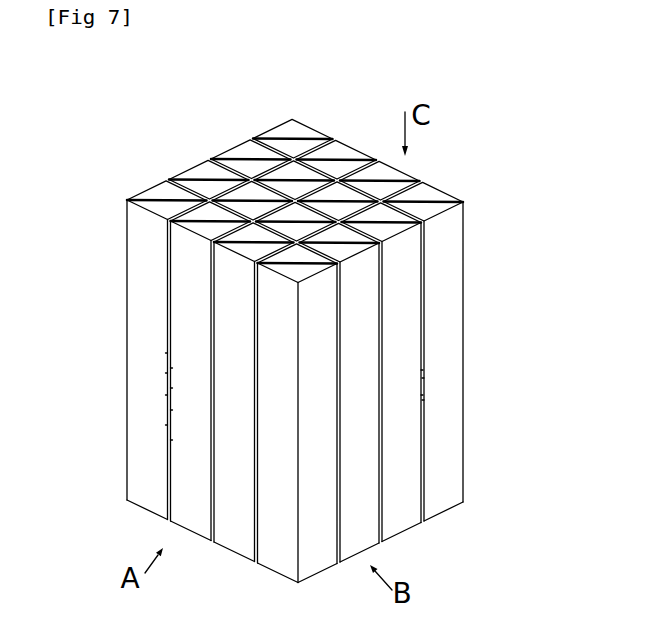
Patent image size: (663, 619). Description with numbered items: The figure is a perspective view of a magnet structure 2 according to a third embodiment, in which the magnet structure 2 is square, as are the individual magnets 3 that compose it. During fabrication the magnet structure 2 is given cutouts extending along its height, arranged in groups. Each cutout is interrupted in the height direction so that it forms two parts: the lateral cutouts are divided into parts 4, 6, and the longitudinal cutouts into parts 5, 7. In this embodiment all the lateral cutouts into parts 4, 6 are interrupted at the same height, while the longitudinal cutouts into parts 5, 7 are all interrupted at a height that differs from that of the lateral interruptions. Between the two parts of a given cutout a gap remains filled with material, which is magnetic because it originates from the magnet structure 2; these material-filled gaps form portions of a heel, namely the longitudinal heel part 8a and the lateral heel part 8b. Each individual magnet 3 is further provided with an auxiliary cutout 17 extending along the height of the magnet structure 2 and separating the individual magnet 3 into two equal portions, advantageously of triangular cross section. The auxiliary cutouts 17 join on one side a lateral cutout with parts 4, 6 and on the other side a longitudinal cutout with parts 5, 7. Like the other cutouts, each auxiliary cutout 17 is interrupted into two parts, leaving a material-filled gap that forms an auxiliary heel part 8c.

The magnet structure 2 is at (482, 195).
The individual magnet 3 is at (138, 193).
The lateral cutout part 4 is at (425, 265).
The longitudinal cutout part 5 is at (168, 272).
The lateral cutout part 6 is at (423, 450).
The longitudinal cutout part 7 is at (168, 472).
The longitudinal heel part 8a is at (168, 365).
The lateral heel part 8b is at (425, 378).
The auxiliary heel part 8c is at (168, 407).
The auxiliary cutout 17 is at (203, 178).